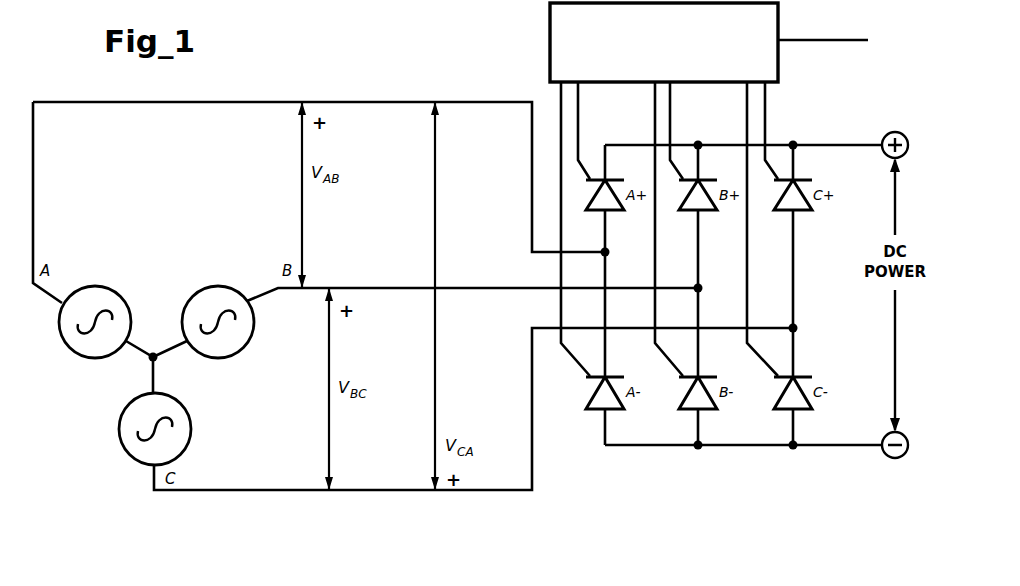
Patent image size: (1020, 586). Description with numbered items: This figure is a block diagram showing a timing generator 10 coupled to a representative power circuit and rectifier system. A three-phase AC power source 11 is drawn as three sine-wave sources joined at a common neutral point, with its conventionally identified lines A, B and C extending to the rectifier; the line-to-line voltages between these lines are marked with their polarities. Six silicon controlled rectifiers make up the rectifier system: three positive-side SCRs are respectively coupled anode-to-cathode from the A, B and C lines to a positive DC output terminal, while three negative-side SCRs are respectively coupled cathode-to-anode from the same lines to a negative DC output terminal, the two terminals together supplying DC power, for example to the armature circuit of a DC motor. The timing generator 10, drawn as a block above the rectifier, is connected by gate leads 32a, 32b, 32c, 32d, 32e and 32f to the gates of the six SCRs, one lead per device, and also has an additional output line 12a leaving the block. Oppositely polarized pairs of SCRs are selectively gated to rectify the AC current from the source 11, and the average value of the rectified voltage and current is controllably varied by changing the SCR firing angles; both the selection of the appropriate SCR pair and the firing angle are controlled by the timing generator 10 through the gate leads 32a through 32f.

The timing generator 10 is at (647, 67).
The 3-phase AC power source 11 is at (120, 429).
The timing generator output line 12a is at (816, 40).
The gate lead 32a is at (578, 112).
The gate lead 32b is at (747, 126).
The gate lead 32c is at (670, 110).
The gate lead 32d is at (561, 110).
The gate lead 32e is at (765, 113).
The gate lead 32f is at (655, 122).